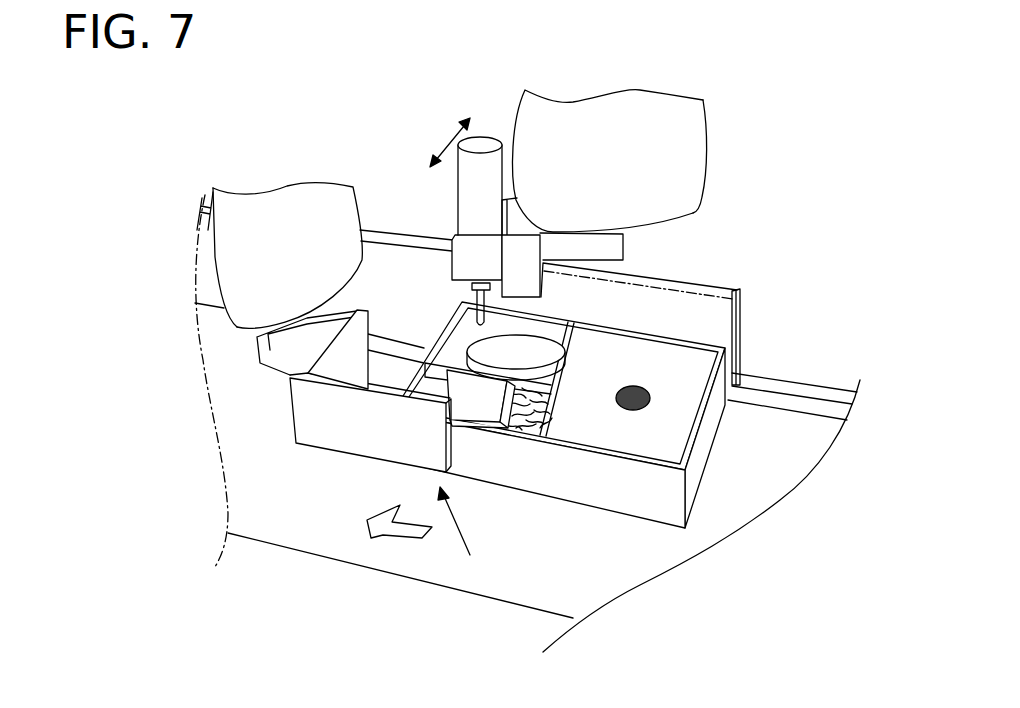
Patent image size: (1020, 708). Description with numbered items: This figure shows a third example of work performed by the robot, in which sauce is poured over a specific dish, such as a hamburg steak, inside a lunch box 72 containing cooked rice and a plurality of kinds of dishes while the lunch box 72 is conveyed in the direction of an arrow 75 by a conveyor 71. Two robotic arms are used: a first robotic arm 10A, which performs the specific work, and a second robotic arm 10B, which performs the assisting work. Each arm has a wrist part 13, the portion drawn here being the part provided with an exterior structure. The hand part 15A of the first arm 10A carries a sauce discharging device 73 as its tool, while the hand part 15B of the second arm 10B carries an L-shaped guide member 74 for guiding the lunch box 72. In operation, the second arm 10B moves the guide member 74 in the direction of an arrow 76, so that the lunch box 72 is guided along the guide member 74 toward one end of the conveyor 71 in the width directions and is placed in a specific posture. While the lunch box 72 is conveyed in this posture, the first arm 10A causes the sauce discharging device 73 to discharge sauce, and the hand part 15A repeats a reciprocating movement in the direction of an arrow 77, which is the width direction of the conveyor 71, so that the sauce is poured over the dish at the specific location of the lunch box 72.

The first robotic arm 10A is at (712, 112).
The second robotic arm 10B is at (233, 177).
The wrist part 13 is at (216, 257).
The hand part of the first robotic arm 15A is at (442, 213).
The hand part of the second robotic arm 15B is at (232, 335).
The conveyor 71 is at (495, 575).
The lunch box 72 is at (628, 497).
The sauce discharging device 73 is at (484, 137).
The guide member 74 is at (313, 417).
The arrow (conveying direction) 75 is at (397, 538).
The arrow (guide member moving direction) 76 is at (463, 540).
The arrow (reciprocating direction) 77 is at (450, 140).